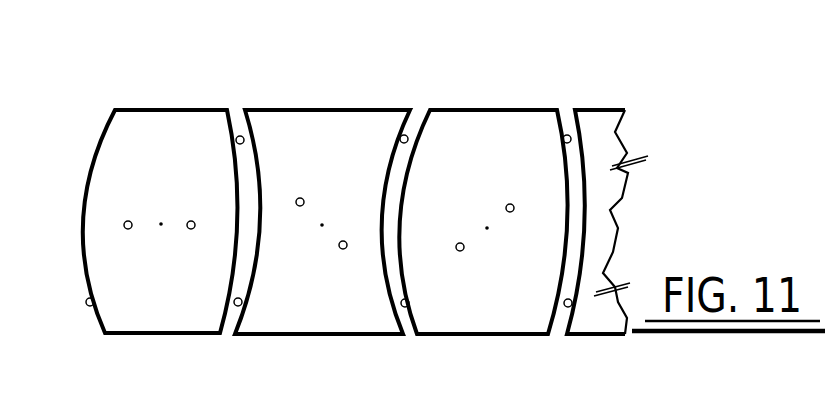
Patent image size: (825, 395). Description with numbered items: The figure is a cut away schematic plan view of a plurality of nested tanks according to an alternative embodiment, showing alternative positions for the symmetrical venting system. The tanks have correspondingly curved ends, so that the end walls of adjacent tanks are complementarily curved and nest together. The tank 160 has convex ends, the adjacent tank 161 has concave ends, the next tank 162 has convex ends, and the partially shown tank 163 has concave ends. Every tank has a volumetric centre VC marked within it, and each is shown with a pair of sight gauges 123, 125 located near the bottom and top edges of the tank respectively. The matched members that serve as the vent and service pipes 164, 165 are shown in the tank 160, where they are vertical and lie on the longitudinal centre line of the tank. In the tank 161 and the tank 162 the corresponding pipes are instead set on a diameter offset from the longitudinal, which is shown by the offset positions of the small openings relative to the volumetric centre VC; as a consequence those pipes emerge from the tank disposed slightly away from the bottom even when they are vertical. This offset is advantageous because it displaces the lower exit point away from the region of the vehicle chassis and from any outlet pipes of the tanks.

The tank 160 is at (125, 138).
The tank 161 is at (295, 135).
The tank 162 is at (470, 135).
The tank 163 is at (600, 142).
The sight gauge 125 is at (240, 135).
The sight gauge 123 is at (88, 307).
The vent pipe 164 is at (126, 221).
The service pipe 165 is at (193, 229).
The volumetric centre VC is at (162, 222).